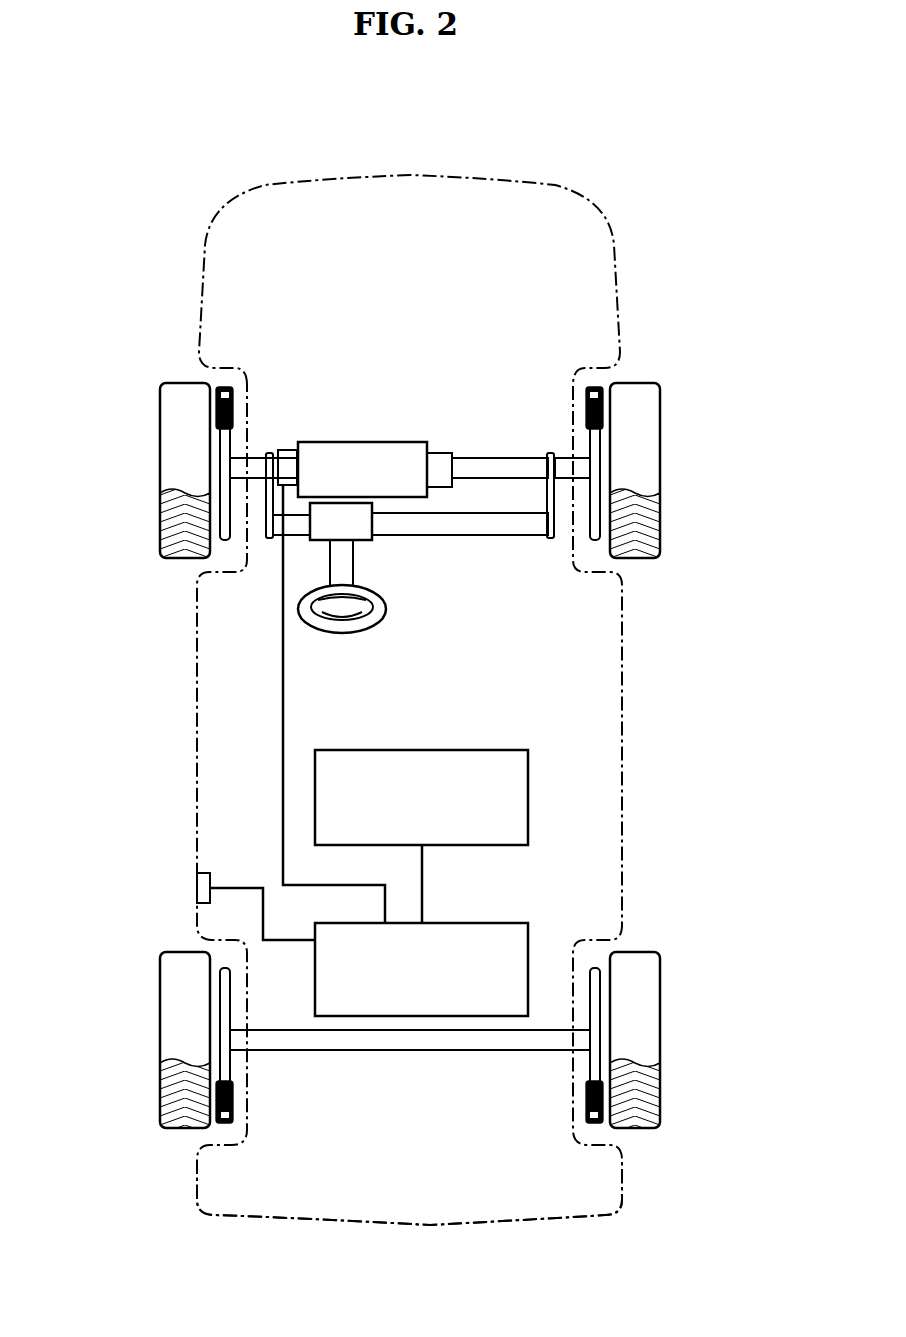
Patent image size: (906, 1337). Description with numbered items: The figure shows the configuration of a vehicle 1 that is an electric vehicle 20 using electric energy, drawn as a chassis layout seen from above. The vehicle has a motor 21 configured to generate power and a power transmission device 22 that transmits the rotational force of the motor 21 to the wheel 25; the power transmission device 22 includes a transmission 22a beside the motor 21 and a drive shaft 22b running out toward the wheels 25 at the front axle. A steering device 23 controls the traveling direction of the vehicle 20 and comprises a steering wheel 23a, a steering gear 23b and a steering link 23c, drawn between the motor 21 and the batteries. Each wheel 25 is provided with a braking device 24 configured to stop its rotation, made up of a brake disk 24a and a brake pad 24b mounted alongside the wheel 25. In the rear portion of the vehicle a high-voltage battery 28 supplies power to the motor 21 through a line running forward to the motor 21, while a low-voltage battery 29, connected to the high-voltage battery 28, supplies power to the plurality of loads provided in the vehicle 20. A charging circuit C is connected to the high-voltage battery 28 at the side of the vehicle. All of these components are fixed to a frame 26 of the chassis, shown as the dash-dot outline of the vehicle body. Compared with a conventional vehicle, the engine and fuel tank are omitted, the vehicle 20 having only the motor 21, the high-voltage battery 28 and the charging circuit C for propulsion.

The vehicle 1 is at (356, 650).
The electric vehicle 20 is at (409, 700).
The motor 21 is at (358, 442).
The power transmission device 22 is at (460, 543).
The transmission 22a is at (440, 479).
The drive shaft 22b is at (533, 484).
The steering device 23 is at (224, 603).
The steering wheel 23a is at (302, 625).
The steering gear 23b is at (292, 533).
The steering link 23c is at (278, 522).
The braking device 24 is at (414, 755).
The brake disk 24a is at (226, 477).
The brake pad 24b is at (216, 386).
The wheel 25 is at (161, 527).
The frame 26 is at (197, 1186).
The high-voltage battery 28 is at (505, 923).
The low-voltage battery 29 is at (528, 777).
The charging circuit C is at (197, 886).